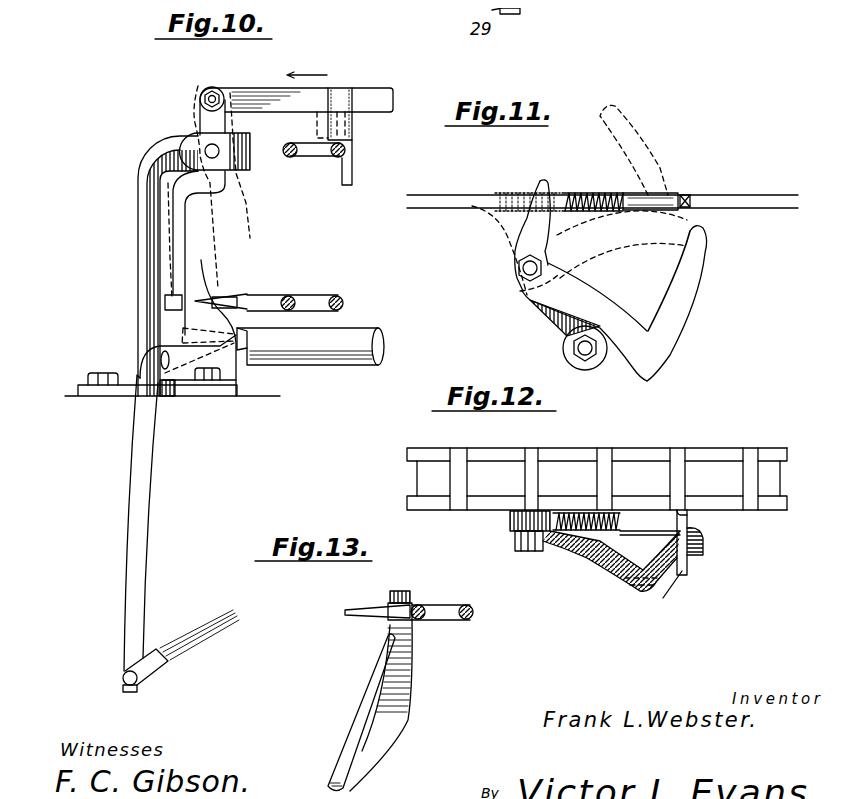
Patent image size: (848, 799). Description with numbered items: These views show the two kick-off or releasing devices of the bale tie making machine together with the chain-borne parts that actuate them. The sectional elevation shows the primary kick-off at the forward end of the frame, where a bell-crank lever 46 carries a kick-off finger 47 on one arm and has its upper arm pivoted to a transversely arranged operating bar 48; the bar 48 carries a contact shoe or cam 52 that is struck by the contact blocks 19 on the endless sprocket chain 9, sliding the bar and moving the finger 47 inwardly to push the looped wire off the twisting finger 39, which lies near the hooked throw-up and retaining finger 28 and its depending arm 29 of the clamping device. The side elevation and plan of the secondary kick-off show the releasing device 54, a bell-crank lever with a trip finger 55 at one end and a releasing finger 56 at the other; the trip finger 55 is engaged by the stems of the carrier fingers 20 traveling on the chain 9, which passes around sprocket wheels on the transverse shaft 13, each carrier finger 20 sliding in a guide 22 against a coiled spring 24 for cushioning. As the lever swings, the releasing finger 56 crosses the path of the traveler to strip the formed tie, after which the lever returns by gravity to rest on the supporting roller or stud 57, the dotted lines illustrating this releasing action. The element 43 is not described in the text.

In FIG. 10, the endless sprocket chain 9 is at (313, 157).
In FIG. 11, the endless sprocket chain 9 is at (758, 204).
In FIG. 12, the endless sprocket chain 9 is at (597, 479).
In FIG. 13, the endless sprocket chain 9 is at (443, 613).
In FIG. 12, the transverse shaft 13 is at (715, 538).
In FIG. 10, the contact block 19 is at (353, 168).
In FIG. 11, the carrier finger 20 is at (690, 200).
In FIG. 12, the carrier finger 20 is at (666, 598).
In FIG. 13, the carrier finger 20 is at (355, 606).
In FIG. 11, the guide 22 is at (658, 197).
In FIG. 11, the coiled spring 24 is at (603, 184).
In FIG. 10, the throw-up and retaining finger 28 is at (245, 363).
In FIG. 10, the depending arm 29 is at (141, 517).
In FIG. 10, the twisting finger 39 is at (225, 298).
In FIG. 10, the roller shaft 43 is at (345, 357).
In FIG. 10, the bell-crank lever 46 is at (168, 225).
In FIG. 10, the kick-off finger 47 is at (204, 296).
In FIG. 10, the operating bar 48 is at (260, 95).
In FIG. 10, the contact shoe or cam 52 is at (342, 130).
In FIG. 11, the secondary kick-off device 54 is at (612, 303).
In FIG. 12, the secondary kick-off device 54 is at (602, 558).
In FIG. 13, the secondary kick-off device 54 is at (382, 740).
In FIG. 11, the trip finger 55 is at (552, 236).
In FIG. 12, the trip finger 55 is at (537, 553).
In FIG. 13, the trip finger 55 is at (400, 597).
In FIG. 11, the releasing finger 56 is at (685, 303).
In FIG. 12, the releasing finger 56 is at (695, 557).
In FIG. 13, the releasing finger 56 is at (372, 678).
In FIG. 11, the supporting roller or stud 57 is at (600, 367).